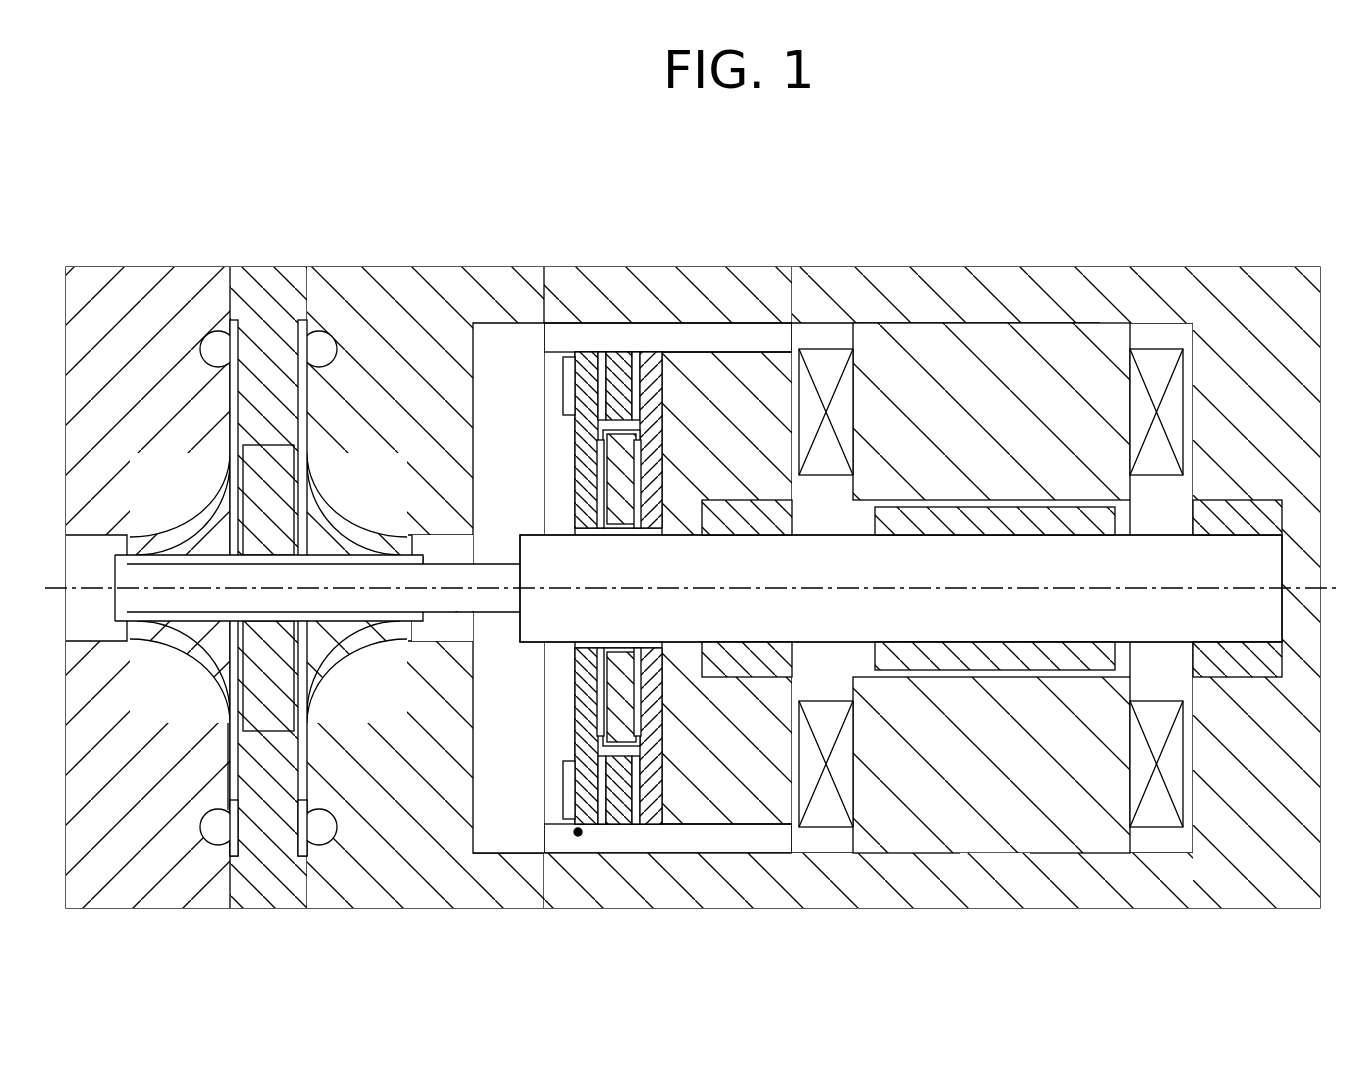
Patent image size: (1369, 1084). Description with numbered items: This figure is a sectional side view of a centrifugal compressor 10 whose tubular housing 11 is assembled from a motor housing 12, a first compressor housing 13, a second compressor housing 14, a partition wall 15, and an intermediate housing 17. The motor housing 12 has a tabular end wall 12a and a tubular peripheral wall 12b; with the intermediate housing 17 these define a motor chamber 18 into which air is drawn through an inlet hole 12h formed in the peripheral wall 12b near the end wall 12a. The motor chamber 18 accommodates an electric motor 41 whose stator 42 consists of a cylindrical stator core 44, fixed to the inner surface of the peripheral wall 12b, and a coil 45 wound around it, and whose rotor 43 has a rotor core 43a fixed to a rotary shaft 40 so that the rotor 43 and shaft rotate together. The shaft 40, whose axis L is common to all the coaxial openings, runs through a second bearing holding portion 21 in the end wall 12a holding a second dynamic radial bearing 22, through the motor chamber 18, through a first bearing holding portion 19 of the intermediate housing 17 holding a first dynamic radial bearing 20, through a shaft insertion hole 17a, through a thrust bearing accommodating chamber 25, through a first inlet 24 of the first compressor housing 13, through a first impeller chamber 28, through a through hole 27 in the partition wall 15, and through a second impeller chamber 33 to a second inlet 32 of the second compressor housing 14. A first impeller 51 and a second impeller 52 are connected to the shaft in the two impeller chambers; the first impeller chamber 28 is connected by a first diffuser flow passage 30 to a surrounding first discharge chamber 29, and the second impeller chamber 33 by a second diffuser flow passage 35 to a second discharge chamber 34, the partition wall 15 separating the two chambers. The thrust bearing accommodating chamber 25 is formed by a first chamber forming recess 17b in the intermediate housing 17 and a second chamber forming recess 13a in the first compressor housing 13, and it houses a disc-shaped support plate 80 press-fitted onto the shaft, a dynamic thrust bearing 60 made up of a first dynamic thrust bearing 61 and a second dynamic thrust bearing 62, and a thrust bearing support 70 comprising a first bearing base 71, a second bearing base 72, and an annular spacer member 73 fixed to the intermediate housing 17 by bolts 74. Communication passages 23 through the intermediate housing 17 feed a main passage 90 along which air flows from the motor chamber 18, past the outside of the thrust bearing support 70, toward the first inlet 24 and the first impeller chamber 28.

The centrifugal compressor 10 is at (80, 243).
The housing 11 is at (112, 268).
The motor housing 12 is at (897, 270).
The end wall 12a is at (1298, 415).
The peripheral wall 12b is at (920, 886).
The inlet hole 12h is at (1153, 285).
The first compressor housing 13 is at (410, 282).
The second chamber forming recess 13a is at (508, 856).
The second compressor housing 14 is at (150, 270).
The partition wall 15 is at (258, 268).
The intermediate housing 17 is at (730, 285).
The shaft insertion hole 17a is at (686, 645).
The first chamber forming recess 17b is at (632, 856).
The motor chamber 18 is at (1181, 680).
The first bearing holding portion 19 is at (740, 500).
The first dynamic radial bearing 20 is at (750, 548).
The second bearing holding portion 21 is at (1233, 508).
The second dynamic radial bearing 22 is at (1238, 527).
The communication passages 23 is at (706, 335).
The first inlet 24 is at (450, 550).
The thrust bearing accommodating chamber 25 is at (578, 835).
The through hole 27 is at (275, 560).
The first impeller chamber 28 is at (337, 520).
The first discharge chamber 29 is at (318, 843).
The first diffuser flow passage 30 is at (312, 755).
The second inlet 32 is at (93, 555).
The second impeller chamber 33 is at (204, 519).
The second discharge chamber 34 is at (225, 828).
The second diffuser flow passage 35 is at (228, 762).
The rotary shaft 40 is at (838, 643).
The electric motor 41 is at (1030, 857).
The stator 42 is at (995, 880).
The rotor 43 is at (1008, 520).
The rotor core 43a is at (987, 665).
The stator core 44 is at (990, 330).
The coil 45 is at (822, 362).
The first impeller 51 is at (336, 660).
The second impeller 52 is at (195, 650).
The dynamic thrust bearing 60 is at (597, 460).
The first dynamic thrust bearing 61 is at (636, 520).
The second dynamic thrust bearing 62 is at (600, 520).
The thrust bearing support 70 is at (602, 355).
The first bearing base 71 is at (652, 520).
The second bearing base 72 is at (566, 360).
The spacer member 73 is at (570, 812).
The bolts 74 is at (562, 385).
The support plate 80 is at (620, 355).
The main passage 90 is at (528, 330).
The axis L is at (945, 600).